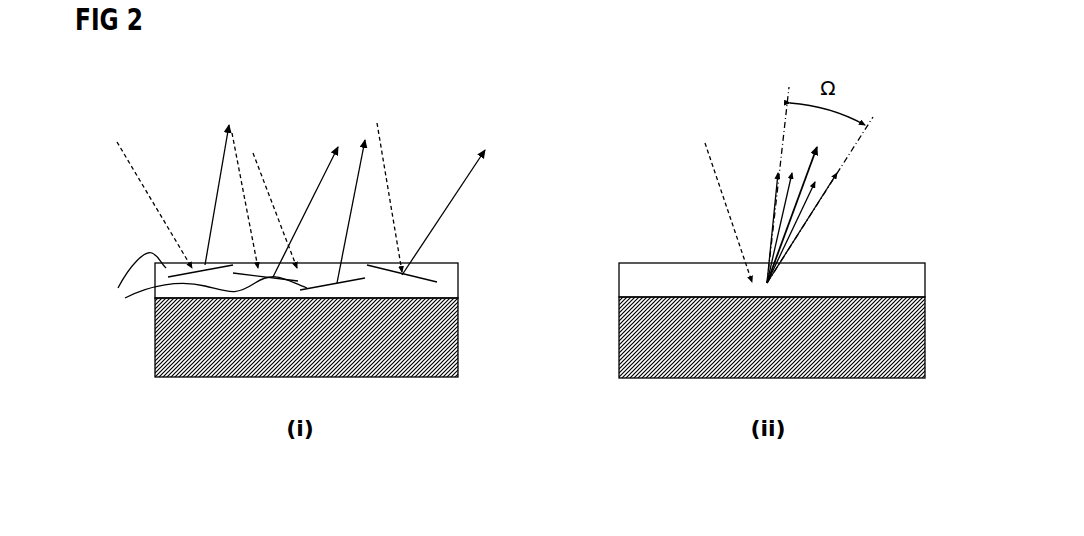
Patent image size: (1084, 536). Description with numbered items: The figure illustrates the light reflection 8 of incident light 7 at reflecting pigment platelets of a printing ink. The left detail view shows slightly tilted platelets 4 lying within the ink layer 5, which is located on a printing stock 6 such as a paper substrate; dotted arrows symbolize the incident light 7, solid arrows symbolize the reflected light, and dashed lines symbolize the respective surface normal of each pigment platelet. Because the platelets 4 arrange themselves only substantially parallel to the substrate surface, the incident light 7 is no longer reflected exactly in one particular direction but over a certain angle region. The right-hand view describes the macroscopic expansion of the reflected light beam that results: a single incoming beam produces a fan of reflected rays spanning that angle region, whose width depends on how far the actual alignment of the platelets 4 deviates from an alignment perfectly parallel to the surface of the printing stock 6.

The platelets 4 is at (270, 283).
The ink layer 5 is at (458, 277).
The printing stock 6 is at (176, 357).
The incident light 7 is at (162, 220).
The light reflection 8 is at (221, 172).